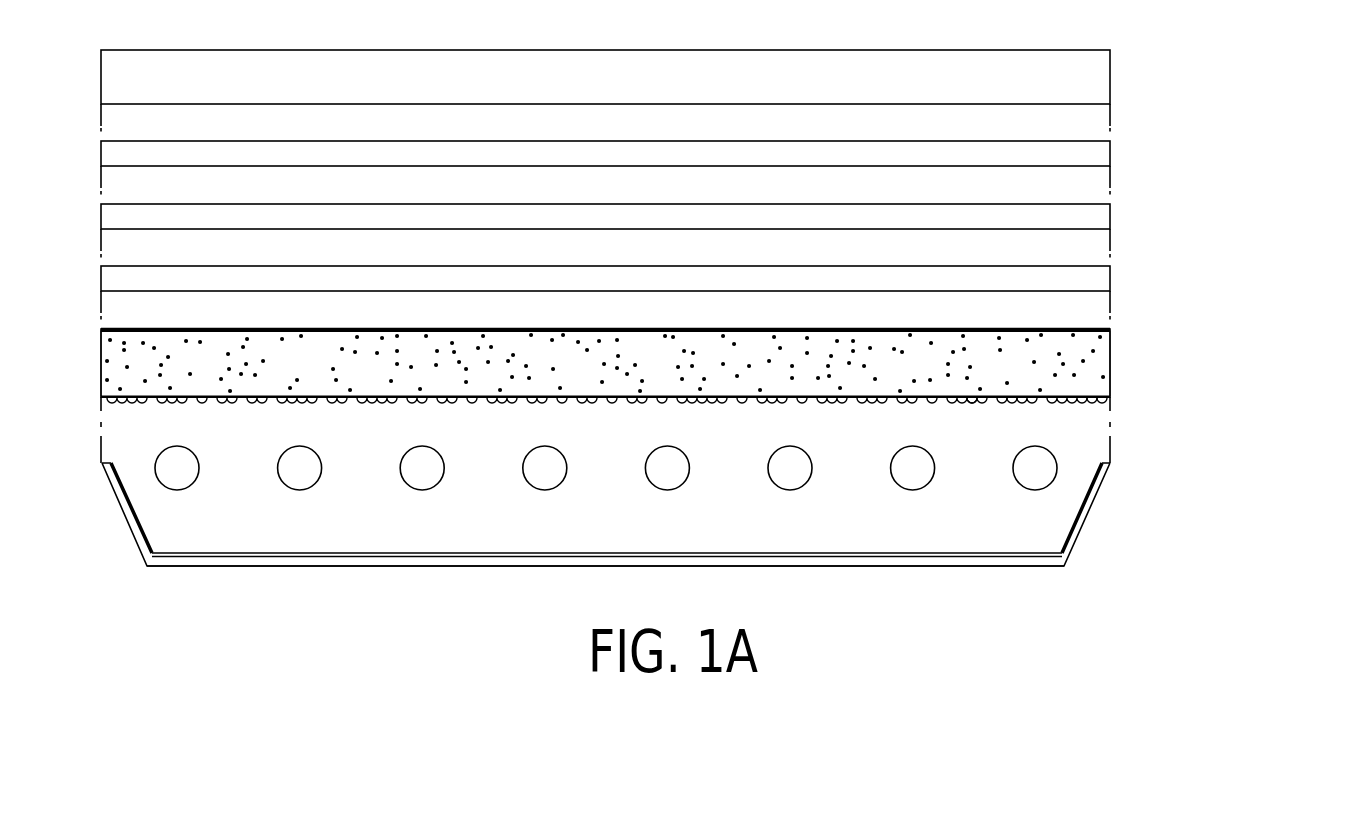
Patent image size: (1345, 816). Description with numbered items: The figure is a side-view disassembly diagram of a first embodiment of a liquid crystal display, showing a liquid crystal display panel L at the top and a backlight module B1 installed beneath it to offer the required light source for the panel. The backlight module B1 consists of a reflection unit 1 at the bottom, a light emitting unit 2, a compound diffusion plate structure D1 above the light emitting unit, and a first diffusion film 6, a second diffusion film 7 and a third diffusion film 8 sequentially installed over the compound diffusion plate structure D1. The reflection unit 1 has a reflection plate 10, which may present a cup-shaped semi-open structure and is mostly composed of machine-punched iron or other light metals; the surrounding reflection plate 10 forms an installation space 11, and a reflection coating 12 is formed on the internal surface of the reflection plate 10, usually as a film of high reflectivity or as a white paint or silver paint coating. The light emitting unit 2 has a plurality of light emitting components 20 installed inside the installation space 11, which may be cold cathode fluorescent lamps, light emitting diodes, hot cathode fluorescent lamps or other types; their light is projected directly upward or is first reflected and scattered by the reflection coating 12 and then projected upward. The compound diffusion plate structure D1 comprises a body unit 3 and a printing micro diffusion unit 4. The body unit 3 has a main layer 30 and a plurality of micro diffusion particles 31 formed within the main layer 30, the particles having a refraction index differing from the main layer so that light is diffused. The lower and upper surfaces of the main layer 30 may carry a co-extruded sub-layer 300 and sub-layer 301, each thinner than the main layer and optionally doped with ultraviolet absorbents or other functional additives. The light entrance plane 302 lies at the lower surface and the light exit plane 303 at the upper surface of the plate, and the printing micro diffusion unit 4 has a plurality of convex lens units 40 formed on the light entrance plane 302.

The liquid crystal display panel L is at (1124, 80).
The third diffusion film 8 is at (1124, 155).
The second diffusion film 7 is at (1124, 219).
The first diffusion film 6 is at (1124, 277).
The body unit 3 is at (668, 346).
The light exit plane 303 is at (1106, 328).
The sub-layer 301 is at (1110, 331).
The main layer 30 is at (1110, 371).
The micro diffusion particles 31 is at (1101, 350).
The sub-layer 300 is at (1110, 393).
The light entrance plane 302 is at (1092, 403).
The printing micro diffusion unit 4 is at (672, 432).
The convex lens units 40 is at (972, 403).
The compound diffusion plate structure D1 is at (1240, 345).
The backlight module B1 is at (1283, 163).
The reflection unit 1 is at (690, 544).
The reflection plate 10 is at (1070, 550).
The installation space 11 is at (993, 533).
The reflection coating 12 is at (1087, 525).
The light emitting unit 2 is at (715, 497).
The light emitting components 20 is at (898, 480).